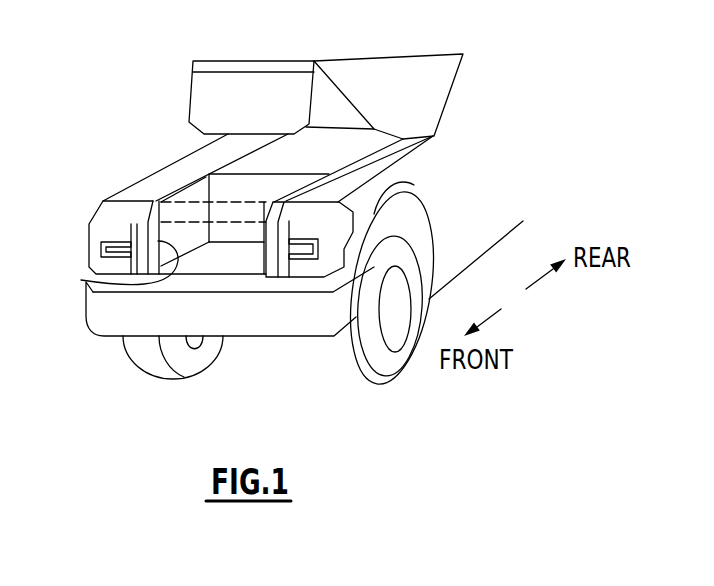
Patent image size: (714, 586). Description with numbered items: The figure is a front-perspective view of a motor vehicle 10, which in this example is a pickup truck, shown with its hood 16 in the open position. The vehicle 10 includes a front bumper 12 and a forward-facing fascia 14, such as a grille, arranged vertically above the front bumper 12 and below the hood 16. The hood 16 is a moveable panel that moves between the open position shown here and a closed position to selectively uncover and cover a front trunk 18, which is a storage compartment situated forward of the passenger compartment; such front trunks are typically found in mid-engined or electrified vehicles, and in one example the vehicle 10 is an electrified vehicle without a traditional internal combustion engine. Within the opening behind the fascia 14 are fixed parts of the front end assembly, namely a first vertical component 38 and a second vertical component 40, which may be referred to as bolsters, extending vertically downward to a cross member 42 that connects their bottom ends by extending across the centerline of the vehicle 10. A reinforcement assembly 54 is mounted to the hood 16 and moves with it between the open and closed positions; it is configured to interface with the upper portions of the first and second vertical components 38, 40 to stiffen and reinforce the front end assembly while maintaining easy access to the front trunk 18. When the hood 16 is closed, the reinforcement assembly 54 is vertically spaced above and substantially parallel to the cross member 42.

The motor vehicle 10 is at (127, 91).
The front bumper 12 is at (103, 320).
The forward-facing fascia 14 is at (68, 232).
The hood 16 is at (356, 90).
The front trunk 18 is at (263, 182).
The first vertical component 38 is at (80, 281).
The second vertical component 40 is at (264, 250).
The cross member 42 is at (208, 270).
The reinforcement assembly 54 is at (182, 60).